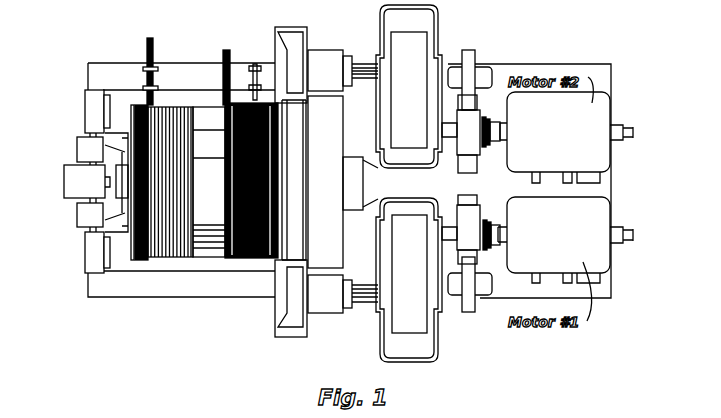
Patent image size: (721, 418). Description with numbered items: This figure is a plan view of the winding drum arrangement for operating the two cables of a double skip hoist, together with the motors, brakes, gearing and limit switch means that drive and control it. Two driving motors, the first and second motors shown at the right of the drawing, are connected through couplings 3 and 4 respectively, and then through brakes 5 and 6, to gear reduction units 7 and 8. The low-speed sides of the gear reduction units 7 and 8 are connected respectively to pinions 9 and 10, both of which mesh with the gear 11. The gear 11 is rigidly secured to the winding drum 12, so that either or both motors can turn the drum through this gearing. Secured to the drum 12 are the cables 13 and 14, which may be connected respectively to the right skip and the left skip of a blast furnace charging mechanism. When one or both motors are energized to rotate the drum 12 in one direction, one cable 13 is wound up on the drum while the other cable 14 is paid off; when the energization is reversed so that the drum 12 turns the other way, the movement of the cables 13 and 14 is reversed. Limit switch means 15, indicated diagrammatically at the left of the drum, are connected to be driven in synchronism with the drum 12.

The coupling 3 is at (493, 220).
The coupling 4 is at (488, 145).
The brake 5 is at (481, 296).
The brake 6 is at (481, 78).
The gear reduction unit 7 is at (423, 346).
The gear reduction unit 8 is at (425, 22).
The pinion 9 is at (330, 310).
The pinion 10 is at (330, 62).
The gear 11 is at (330, 182).
The winding drum 12 is at (218, 257).
The cable 13 is at (221, 52).
The cable 14 is at (154, 46).
The limit switch means 15 is at (86, 109).